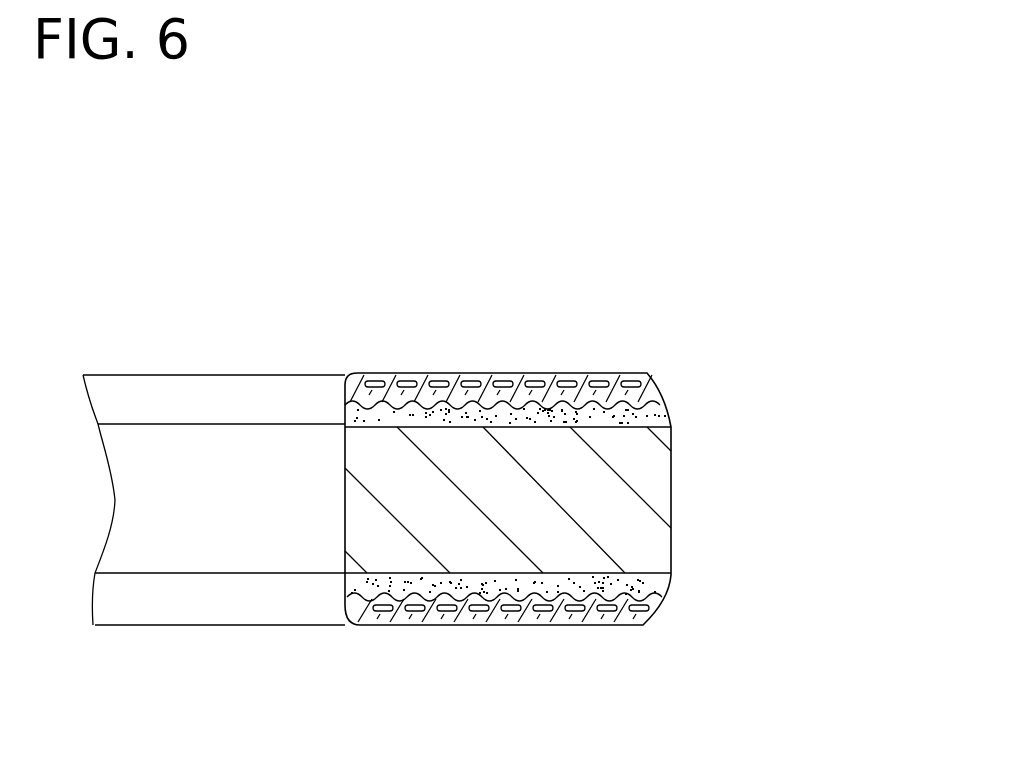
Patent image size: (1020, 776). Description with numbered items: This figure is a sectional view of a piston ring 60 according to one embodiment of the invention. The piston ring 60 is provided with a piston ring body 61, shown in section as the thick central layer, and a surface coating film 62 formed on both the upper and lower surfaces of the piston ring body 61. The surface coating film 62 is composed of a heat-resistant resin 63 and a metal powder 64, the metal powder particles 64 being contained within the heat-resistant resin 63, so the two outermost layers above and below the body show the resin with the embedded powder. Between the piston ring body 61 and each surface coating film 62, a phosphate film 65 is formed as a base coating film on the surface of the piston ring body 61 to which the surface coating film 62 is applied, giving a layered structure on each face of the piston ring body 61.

The piston ring 60 is at (546, 275).
The piston ring body 61 is at (648, 480).
The surface coating film 62 is at (755, 242).
The heat-resistant resin 63 is at (658, 392).
The metal powder 64 is at (620, 373).
The phosphate film 65 is at (663, 412).